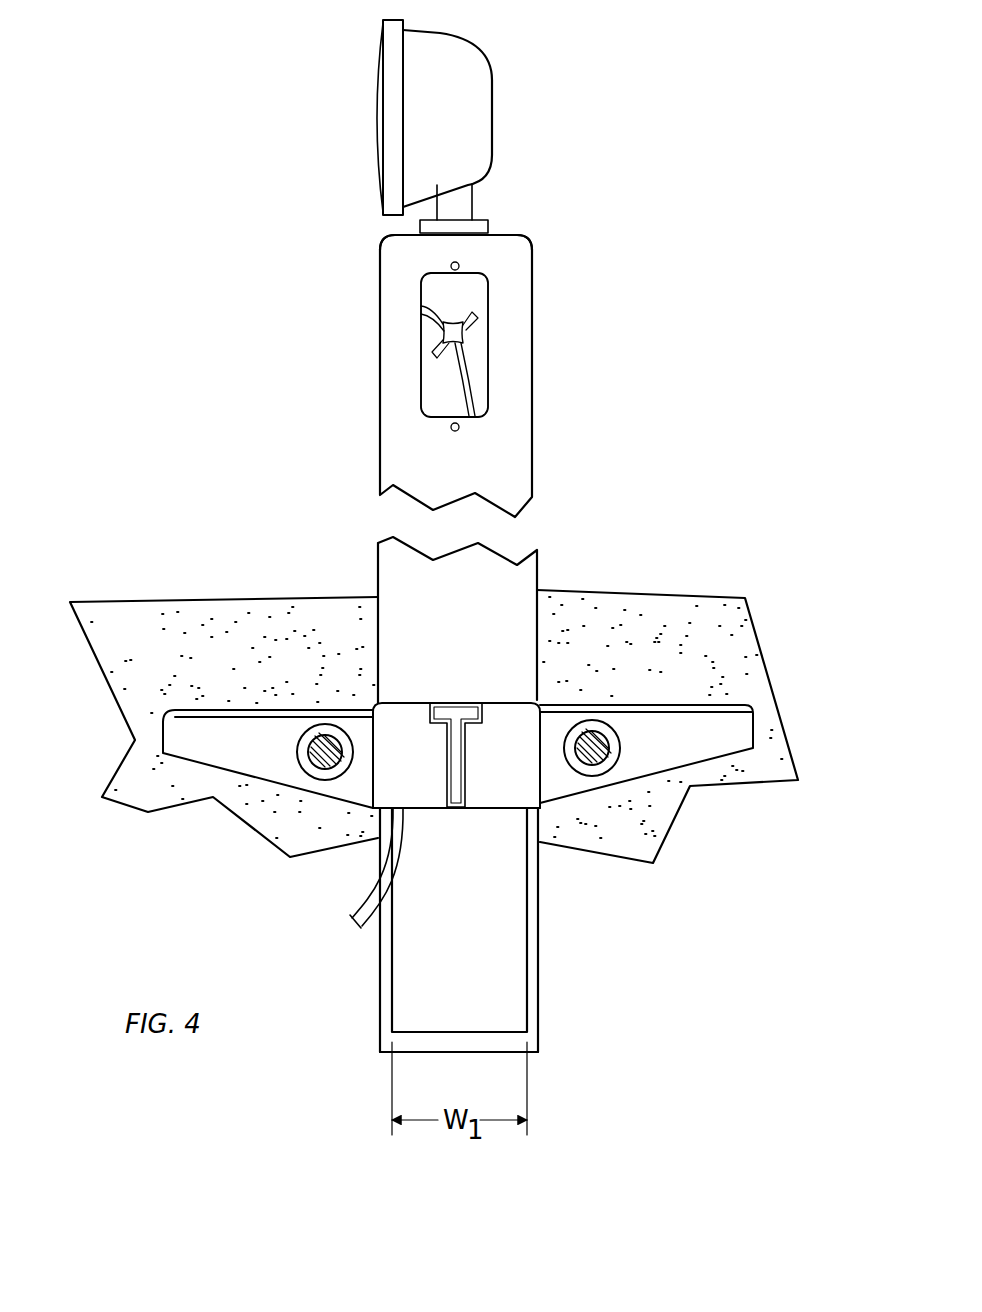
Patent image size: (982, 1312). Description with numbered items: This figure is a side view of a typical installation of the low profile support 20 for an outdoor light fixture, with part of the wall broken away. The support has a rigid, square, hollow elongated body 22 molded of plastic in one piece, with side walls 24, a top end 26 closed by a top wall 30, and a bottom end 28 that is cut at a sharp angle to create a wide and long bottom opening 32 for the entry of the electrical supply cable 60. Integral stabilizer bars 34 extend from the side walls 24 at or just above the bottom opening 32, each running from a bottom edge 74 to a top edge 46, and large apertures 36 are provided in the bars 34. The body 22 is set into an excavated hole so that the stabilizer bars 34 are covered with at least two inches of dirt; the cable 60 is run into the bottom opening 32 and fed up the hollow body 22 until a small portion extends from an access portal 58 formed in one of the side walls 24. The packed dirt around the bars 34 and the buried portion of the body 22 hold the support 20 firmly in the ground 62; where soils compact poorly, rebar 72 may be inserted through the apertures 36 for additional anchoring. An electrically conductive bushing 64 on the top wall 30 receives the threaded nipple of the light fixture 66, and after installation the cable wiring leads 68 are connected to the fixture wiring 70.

The low profile support 20 is at (300, 283).
The hollow elongated body 22 is at (535, 412).
The side walls 24 is at (523, 372).
The top end 26 is at (522, 237).
The bottom end 28 is at (535, 1053).
The top wall 30 is at (495, 229).
The bottom opening 32 is at (497, 935).
The stabilizer bars 34 is at (748, 732).
The apertures 36 is at (598, 768).
The top edge 46 is at (655, 708).
The access portal 58 is at (478, 292).
The electrical supply cable 60 is at (468, 400).
The ground 62 is at (568, 598).
The electrically conductive bushing 64 is at (428, 229).
The light fixture 66 is at (472, 95).
The cable wiring leads 68 is at (465, 335).
The fixture wiring 70 is at (445, 330).
The rebar 72 is at (606, 762).
The bottom edge 74 is at (570, 808).